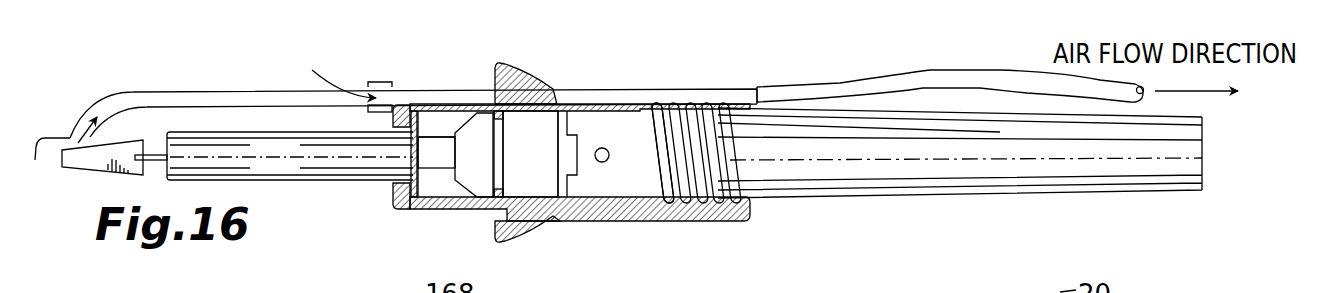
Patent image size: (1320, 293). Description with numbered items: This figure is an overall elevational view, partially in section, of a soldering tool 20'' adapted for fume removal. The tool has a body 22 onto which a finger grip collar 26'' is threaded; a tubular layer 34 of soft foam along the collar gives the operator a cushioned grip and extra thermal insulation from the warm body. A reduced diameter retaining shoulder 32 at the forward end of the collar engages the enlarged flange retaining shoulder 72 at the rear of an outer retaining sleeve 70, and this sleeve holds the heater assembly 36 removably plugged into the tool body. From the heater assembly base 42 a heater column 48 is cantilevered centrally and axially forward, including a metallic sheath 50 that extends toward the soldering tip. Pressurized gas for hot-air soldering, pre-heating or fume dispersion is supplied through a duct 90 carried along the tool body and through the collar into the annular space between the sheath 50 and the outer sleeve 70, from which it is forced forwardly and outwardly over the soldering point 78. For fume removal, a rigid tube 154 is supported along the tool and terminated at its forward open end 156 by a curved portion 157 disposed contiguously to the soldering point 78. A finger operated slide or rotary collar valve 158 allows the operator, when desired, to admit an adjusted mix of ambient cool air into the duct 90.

The curved portion 157 is at (100, 98).
The rigid tube 154 is at (230, 90).
The forward open end 156 is at (43, 173).
The soldering point 78 is at (110, 173).
The outer retaining sleeve 70 is at (252, 140).
The slide or rotary collar valve 158 is at (363, 82).
The retaining shoulder 32 is at (393, 193).
The soldering tool 20'' is at (580, 75).
The finger grip collar 26'' is at (603, 226).
The tubular layer of soft foam 34 is at (535, 80).
The flange retaining shoulder 72 is at (428, 127).
The metallic sheath 50 is at (438, 133).
The heater column 48 is at (452, 167).
The heater assembly base 42 is at (492, 166).
The heater assembly 36 is at (549, 170).
The body 22 is at (808, 168).
The duct 90 is at (855, 79).